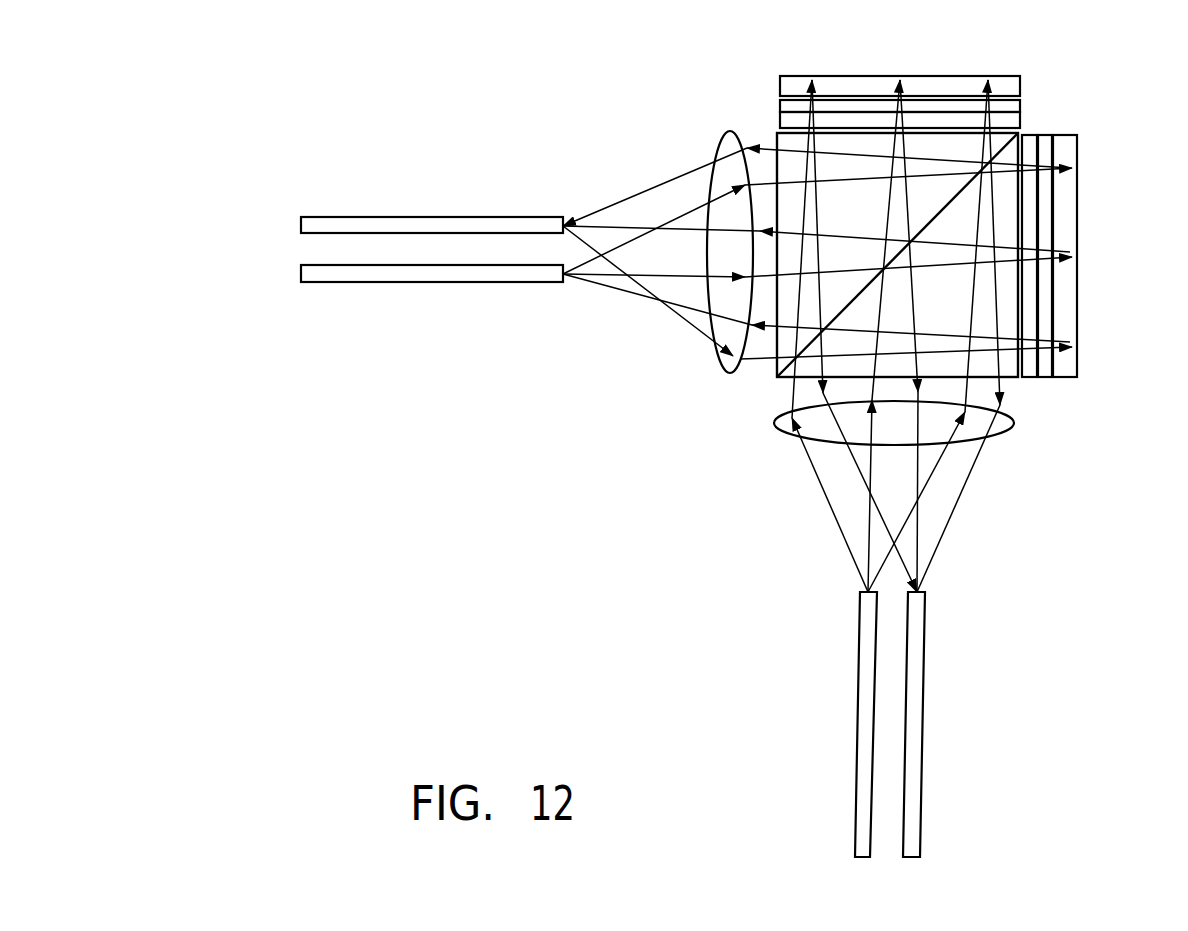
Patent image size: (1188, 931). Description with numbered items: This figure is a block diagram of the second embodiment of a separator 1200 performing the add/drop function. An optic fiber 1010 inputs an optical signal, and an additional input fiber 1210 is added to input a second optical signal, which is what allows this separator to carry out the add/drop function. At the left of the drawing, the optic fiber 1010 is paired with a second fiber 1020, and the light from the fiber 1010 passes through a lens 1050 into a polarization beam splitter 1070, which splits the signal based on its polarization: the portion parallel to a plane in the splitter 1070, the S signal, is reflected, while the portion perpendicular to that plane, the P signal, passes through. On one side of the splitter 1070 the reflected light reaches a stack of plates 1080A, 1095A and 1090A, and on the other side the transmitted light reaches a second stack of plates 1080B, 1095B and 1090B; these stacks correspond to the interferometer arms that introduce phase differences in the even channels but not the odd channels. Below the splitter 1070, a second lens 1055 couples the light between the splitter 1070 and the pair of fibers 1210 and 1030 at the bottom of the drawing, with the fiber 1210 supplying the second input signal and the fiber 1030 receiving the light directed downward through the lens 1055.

The separator 1200 is at (925, 38).
The optic fiber 1010 is at (357, 283).
The second optical fiber 1020 is at (357, 216).
The third optical fiber 1030 is at (923, 718).
The additional input fiber 1210 is at (857, 718).
The lens 1050 is at (731, 130).
The second lens 1055 is at (776, 423).
The polarization beam splitter 1070 is at (777, 376).
The first quarter-wave plate 1080A is at (1020, 121).
The first Faraday rotator 1095A is at (1020, 105).
The first mirror 1090A is at (1020, 80).
The second quarter-wave plate 1080B is at (1030, 378).
The second Faraday rotator 1095B is at (1048, 378).
The second mirror 1090B is at (1067, 378).